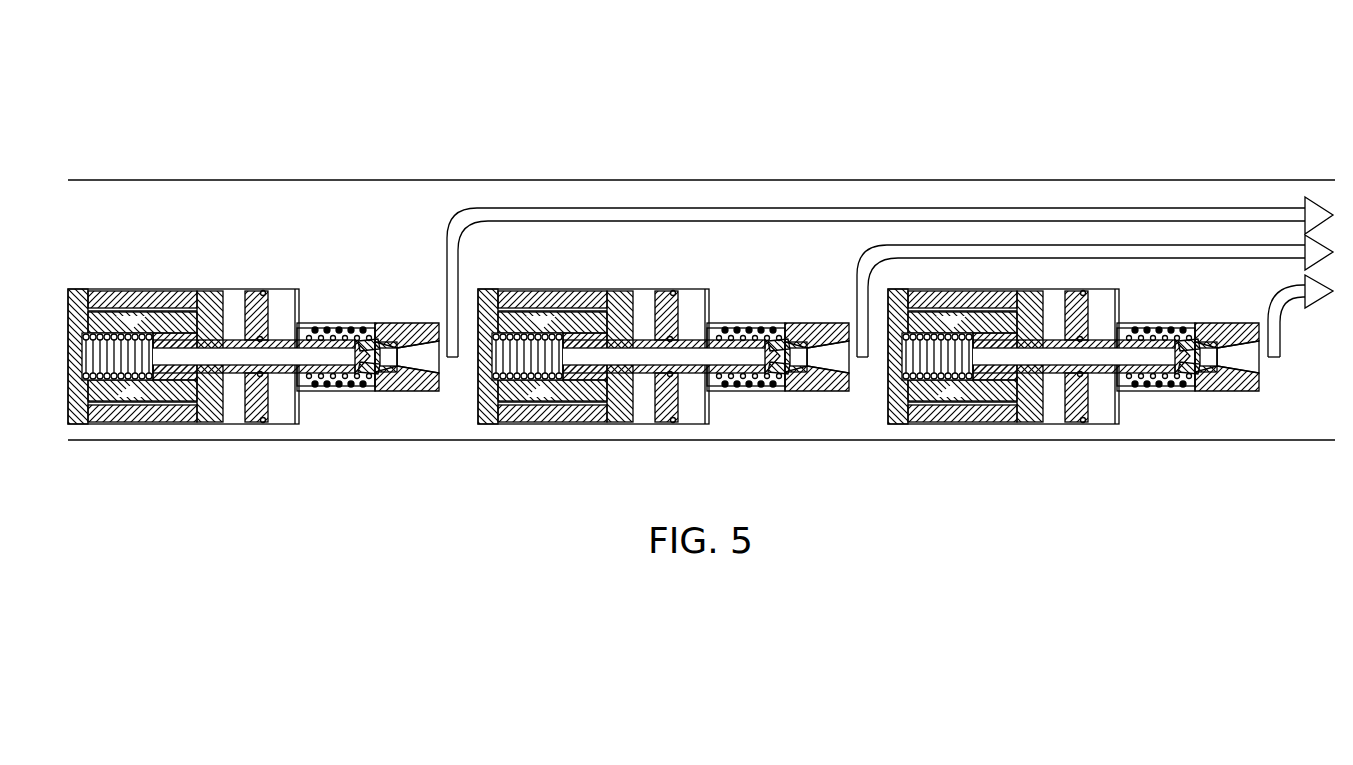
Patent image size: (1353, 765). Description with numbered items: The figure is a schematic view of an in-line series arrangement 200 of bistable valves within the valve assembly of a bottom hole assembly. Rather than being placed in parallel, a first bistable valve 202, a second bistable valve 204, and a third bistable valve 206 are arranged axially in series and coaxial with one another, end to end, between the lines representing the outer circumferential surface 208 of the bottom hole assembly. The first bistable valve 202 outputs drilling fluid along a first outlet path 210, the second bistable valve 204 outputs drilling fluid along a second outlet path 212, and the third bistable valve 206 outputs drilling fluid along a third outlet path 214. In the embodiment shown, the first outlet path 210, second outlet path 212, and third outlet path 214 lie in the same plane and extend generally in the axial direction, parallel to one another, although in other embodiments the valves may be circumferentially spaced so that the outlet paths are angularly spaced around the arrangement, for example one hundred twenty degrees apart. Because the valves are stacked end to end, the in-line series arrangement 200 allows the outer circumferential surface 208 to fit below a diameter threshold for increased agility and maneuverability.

The in-line series arrangement 200 is at (262, 93).
The first bistable valve 202 is at (211, 430).
The second bistable valve 204 is at (621, 430).
The third bistable valve 206 is at (1031, 430).
The outer circumferential surface 208 is at (207, 177).
The first outlet path 210 is at (470, 205).
The second outlet path 212 is at (882, 243).
The third outlet path 214 is at (1272, 295).